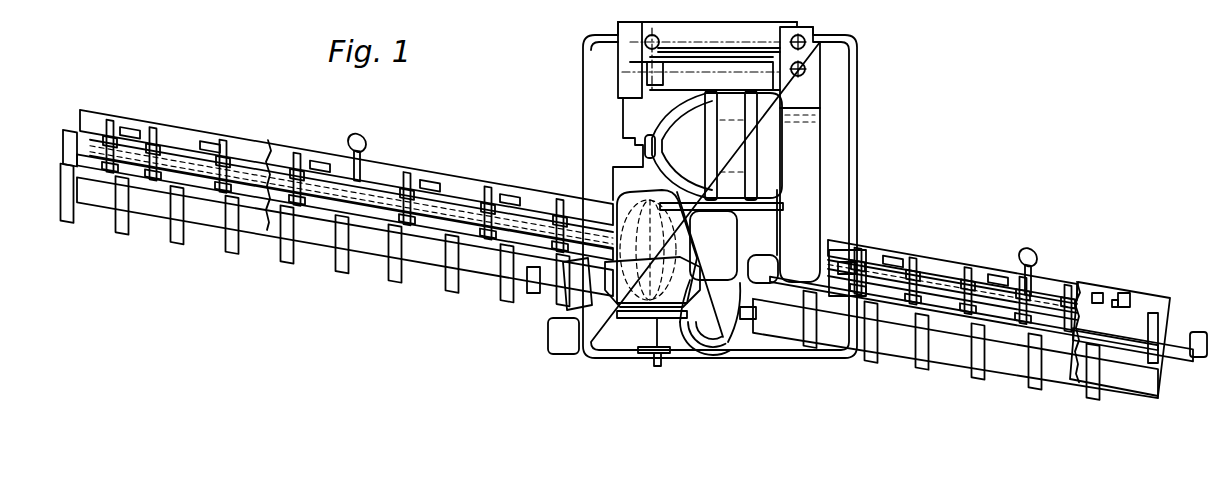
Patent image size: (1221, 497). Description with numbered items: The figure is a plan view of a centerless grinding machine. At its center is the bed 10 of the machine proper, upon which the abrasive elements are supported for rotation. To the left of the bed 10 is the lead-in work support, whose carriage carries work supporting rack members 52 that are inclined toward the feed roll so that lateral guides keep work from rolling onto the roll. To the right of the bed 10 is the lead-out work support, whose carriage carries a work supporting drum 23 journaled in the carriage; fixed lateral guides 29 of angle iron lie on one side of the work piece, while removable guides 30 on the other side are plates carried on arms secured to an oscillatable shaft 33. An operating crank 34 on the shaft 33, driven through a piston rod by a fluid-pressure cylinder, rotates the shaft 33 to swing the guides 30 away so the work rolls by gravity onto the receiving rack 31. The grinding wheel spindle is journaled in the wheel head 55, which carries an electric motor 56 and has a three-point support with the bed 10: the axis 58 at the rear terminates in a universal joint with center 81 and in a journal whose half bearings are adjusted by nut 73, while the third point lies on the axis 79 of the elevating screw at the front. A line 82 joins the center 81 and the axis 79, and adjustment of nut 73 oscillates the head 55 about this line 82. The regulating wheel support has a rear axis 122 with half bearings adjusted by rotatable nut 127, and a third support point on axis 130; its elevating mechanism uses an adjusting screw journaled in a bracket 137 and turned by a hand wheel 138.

The bed 10 is at (857, 138).
The work supporting drum 23 is at (903, 297).
The lateral guides 29 is at (880, 277).
The removable lateral guides 30 is at (957, 333).
The receiving rack 31 is at (1030, 388).
The oscillatable shaft 33 is at (943, 236).
The operating crank 34 is at (1040, 279).
The work supporting rack members 52 is at (336, 278).
The wheel head 55 is at (618, 105).
The electric motor 56 is at (775, 160).
The axis 58 is at (822, 90).
The nut 73 is at (806, 69).
The axis of elevating screw 79 is at (712, 315).
The center of universal joint 81 is at (652, 75).
The line connecting center and axis 82 is at (732, 353).
The axis of regulating wheel support 122 is at (778, 27).
The rotatable nut 127 is at (806, 56).
The axis 130 is at (612, 200).
The bracket 137 is at (1037, 262).
The hand wheel 138 is at (656, 366).